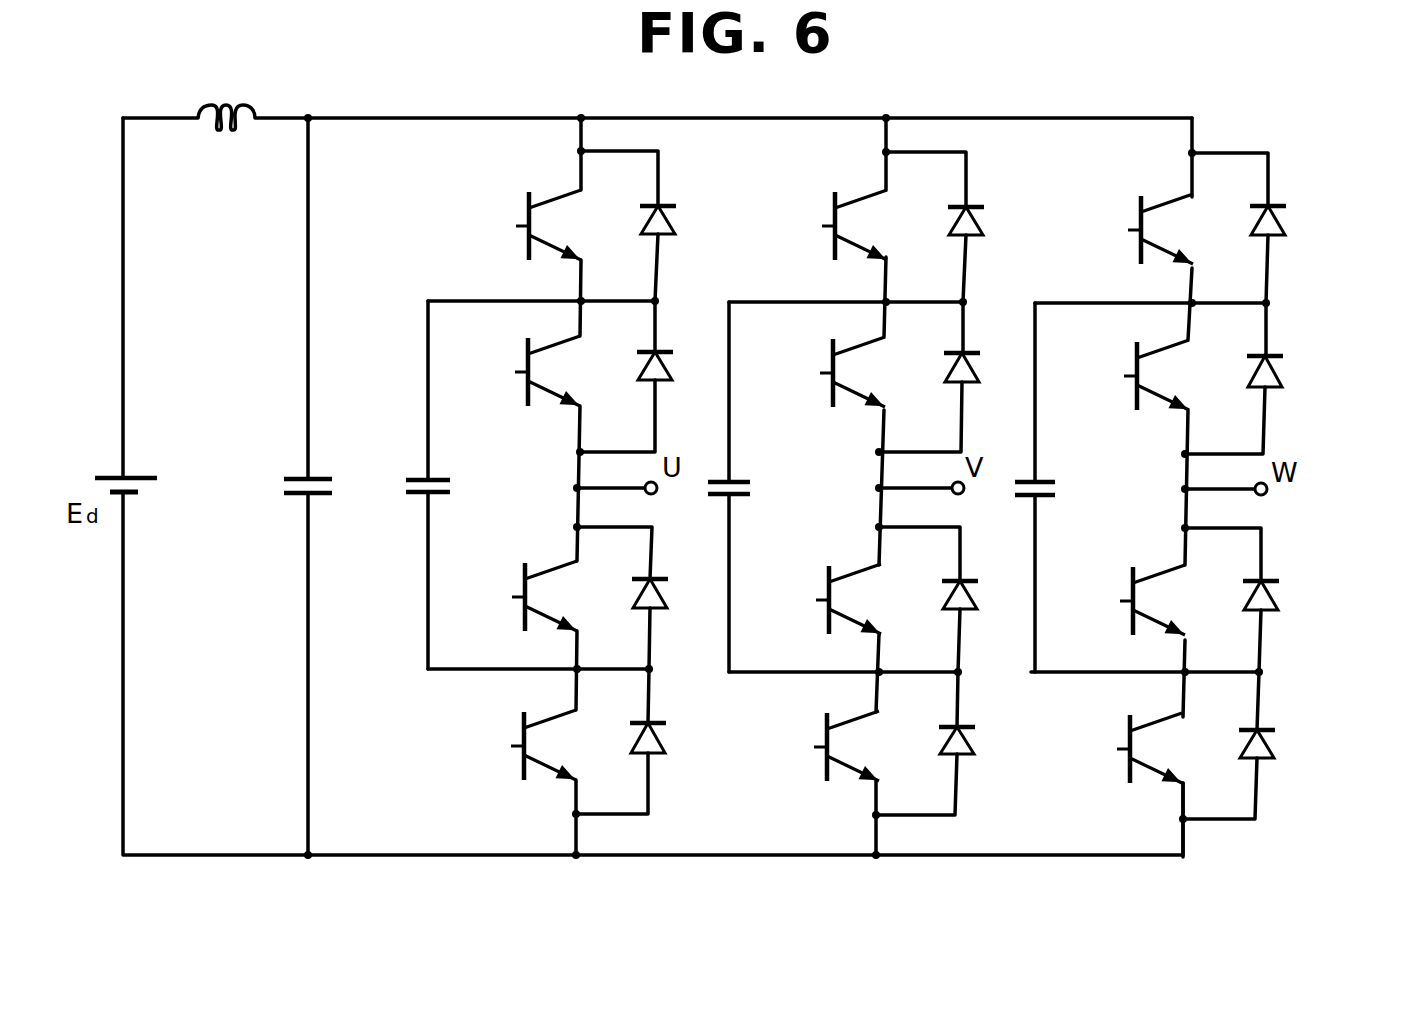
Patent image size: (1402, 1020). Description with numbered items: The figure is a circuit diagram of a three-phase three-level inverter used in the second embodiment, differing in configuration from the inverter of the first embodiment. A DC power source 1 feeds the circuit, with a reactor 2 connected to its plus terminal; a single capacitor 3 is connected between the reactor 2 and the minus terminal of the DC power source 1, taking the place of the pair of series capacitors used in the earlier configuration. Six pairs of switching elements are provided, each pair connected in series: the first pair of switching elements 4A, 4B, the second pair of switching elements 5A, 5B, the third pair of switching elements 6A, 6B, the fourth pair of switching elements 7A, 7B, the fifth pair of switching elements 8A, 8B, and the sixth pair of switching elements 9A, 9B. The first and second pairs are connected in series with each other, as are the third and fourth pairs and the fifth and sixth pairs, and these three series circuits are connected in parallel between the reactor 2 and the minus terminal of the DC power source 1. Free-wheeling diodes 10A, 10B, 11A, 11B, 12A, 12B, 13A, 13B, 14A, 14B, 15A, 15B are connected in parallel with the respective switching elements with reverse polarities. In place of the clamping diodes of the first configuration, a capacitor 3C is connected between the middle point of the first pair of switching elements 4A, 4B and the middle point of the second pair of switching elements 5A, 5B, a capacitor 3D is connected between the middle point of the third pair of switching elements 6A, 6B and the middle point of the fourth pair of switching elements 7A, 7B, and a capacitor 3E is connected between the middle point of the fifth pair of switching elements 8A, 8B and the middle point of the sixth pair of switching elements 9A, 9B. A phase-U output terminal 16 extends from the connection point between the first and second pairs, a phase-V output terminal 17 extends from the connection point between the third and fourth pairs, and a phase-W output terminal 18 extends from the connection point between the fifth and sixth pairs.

The DC power source 1 is at (112, 477).
The reactor 2 is at (250, 117).
The capacitor 3 is at (302, 478).
The capacitor 3C is at (423, 478).
The capacitor 3D is at (742, 479).
The capacitor 3E is at (1044, 481).
The switching element 4A is at (526, 216).
The switching element 4B is at (526, 362).
The switching element 5A is at (522, 582).
The switching element 5B is at (520, 748).
The switching element 6A is at (833, 213).
The switching element 6B is at (832, 360).
The switching element 7A is at (828, 568).
The switching element 7B is at (826, 728).
The switching element 8A is at (1140, 216).
The switching element 8B is at (1136, 362).
The switching element 9A is at (1132, 577).
The switching element 9B is at (1129, 730).
The free-wheeling diode 10A is at (673, 218).
The free-wheeling diode 10B is at (672, 373).
The free-wheeling diode 11A is at (663, 604).
The free-wheeling diode 11B is at (662, 736).
The free-wheeling diode 12A is at (981, 219).
The free-wheeling diode 12B is at (976, 377).
The free-wheeling diode 13A is at (966, 606).
The free-wheeling diode 13B is at (972, 734).
The free-wheeling diode 14A is at (1284, 220).
The free-wheeling diode 14B is at (1281, 370).
The free-wheeling diode 15A is at (1273, 603).
The free-wheeling diode 15B is at (1270, 746).
The phase-U output terminal 16 is at (656, 493).
The phase-V output terminal 17 is at (963, 493).
The phase-W output terminal 18 is at (1266, 494).